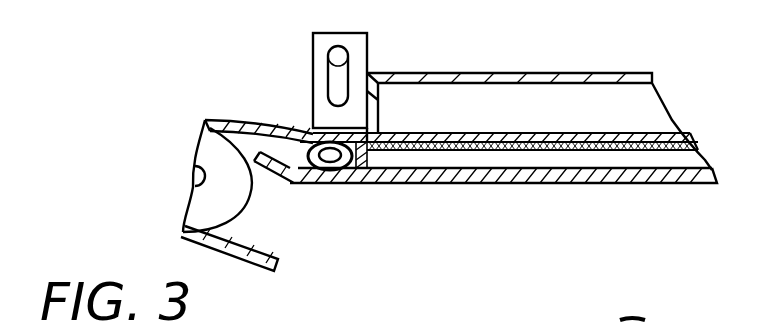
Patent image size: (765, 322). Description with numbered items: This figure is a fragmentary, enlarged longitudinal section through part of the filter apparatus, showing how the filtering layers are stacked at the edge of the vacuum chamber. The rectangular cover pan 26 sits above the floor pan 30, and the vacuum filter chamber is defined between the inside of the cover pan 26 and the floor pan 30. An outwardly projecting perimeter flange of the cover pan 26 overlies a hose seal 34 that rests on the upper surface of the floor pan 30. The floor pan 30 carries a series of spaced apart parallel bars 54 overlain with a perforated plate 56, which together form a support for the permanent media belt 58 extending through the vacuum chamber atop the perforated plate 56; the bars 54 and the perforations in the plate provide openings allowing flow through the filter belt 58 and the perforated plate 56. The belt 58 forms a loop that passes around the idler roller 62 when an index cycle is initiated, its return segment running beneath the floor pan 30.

The cover pan 26 is at (485, 38).
The floor pan 30 is at (482, 185).
The hose seal 34 is at (335, 172).
The spaced apart parallel bars 54 is at (573, 162).
The perforated plate 56 is at (533, 133).
The permanent media belt 58 is at (263, 130).
The idler roller 62 is at (213, 146).